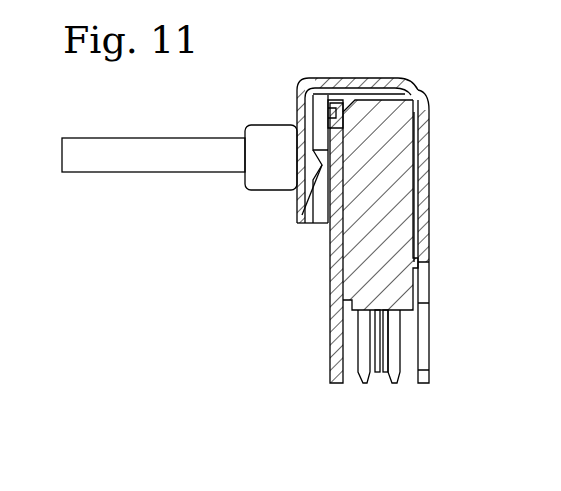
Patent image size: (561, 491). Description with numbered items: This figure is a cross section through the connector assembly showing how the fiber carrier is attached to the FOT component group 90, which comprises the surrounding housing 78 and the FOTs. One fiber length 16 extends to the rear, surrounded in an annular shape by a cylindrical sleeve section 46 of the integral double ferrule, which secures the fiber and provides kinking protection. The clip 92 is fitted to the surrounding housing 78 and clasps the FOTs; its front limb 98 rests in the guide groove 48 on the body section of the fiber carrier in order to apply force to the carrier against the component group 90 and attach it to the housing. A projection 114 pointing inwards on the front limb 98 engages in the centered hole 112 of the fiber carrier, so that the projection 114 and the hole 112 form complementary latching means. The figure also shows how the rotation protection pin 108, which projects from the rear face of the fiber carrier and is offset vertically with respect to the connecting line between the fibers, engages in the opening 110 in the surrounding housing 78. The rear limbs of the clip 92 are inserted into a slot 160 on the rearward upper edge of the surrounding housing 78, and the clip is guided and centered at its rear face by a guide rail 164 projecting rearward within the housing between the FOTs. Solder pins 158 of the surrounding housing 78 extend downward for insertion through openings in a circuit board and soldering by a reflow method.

The fiber length 16 is at (138, 173).
The sleeve section 46 is at (254, 125).
The guide groove 48 is at (325, 185).
The surrounding housing 78 is at (423, 200).
The FOT component group 90 is at (429, 158).
The clip 92 is at (313, 77).
The front limb 98 is at (300, 195).
The rotation protection pin 108 is at (383, 88).
The opening 110 is at (325, 132).
The hole 112 is at (326, 88).
The projection 114 is at (320, 195).
The solder pins 158 is at (330, 362).
The slot 160 is at (418, 86).
The guide rail 164 is at (430, 110).